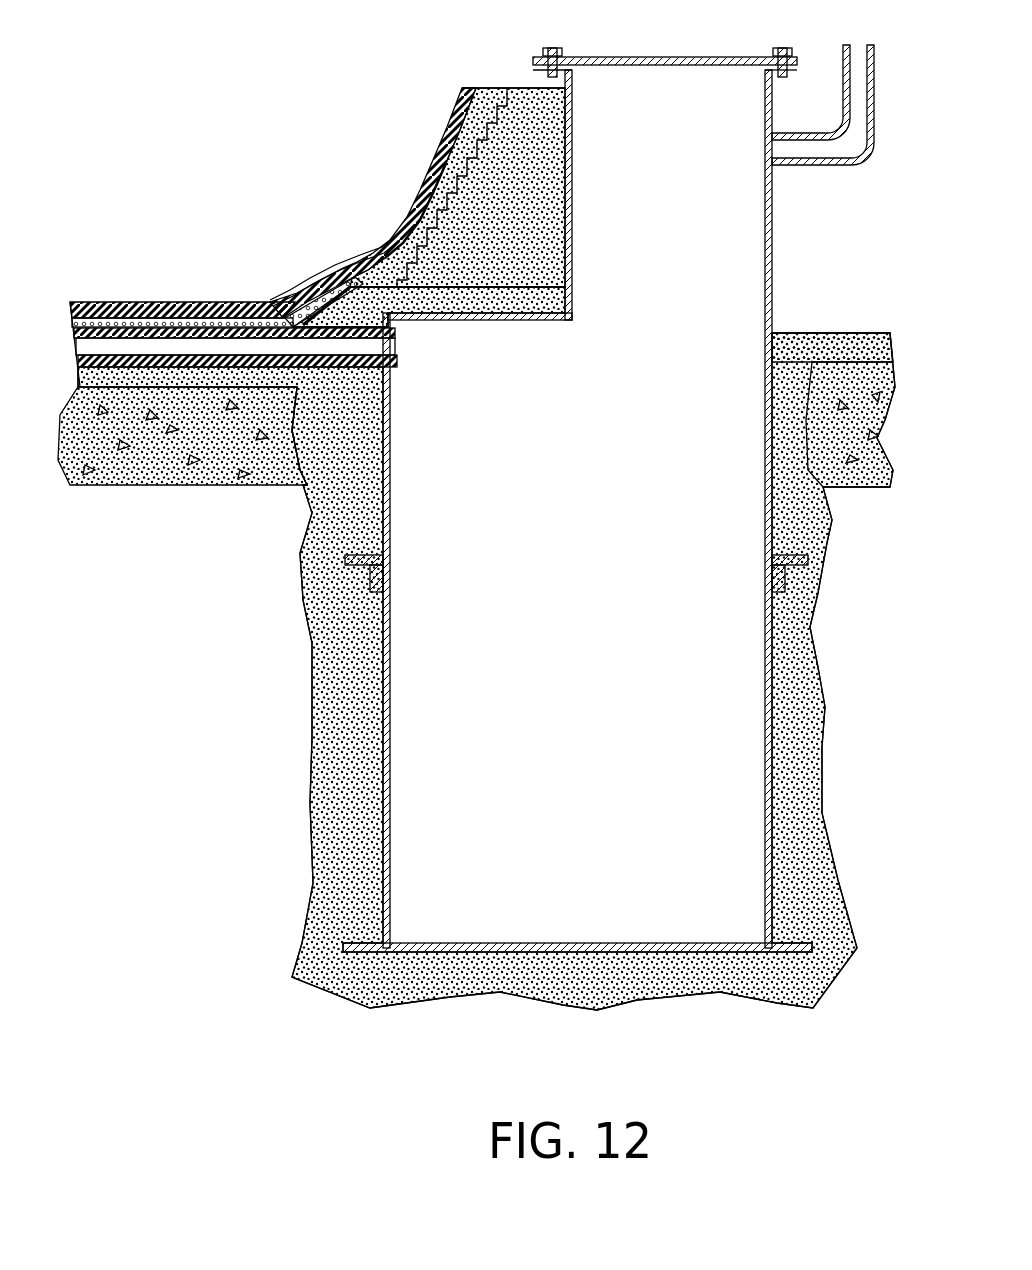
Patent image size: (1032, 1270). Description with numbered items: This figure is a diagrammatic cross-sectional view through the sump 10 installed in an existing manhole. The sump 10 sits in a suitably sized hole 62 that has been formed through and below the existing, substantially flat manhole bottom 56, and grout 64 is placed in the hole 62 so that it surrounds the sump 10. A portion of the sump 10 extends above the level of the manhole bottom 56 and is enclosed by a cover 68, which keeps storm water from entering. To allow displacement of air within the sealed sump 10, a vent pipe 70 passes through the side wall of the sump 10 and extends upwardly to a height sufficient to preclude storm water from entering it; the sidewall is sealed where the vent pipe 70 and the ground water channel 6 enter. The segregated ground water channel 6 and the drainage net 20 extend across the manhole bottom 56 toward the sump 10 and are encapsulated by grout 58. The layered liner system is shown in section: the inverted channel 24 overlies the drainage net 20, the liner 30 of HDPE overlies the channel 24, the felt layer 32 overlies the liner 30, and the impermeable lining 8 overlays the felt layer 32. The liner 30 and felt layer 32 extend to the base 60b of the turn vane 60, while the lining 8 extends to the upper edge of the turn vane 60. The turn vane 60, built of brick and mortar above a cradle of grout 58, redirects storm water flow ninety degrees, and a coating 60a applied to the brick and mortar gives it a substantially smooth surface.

The ground water channel 6 is at (85, 347).
The impermeable lining 8 is at (430, 130).
The sump 10 is at (583, 698).
The drainage net 20 is at (398, 362).
The inverted channel 24 is at (397, 333).
The liner 30 is at (85, 324).
The felt layer 32 is at (173, 318).
The manhole bottom 56 is at (185, 440).
The grout 58 is at (465, 305).
The turn vane 60 is at (520, 185).
The coating 60a is at (425, 225).
The base of turn vane 60b is at (322, 235).
The hole 62 is at (820, 735).
The grout 64 is at (330, 745).
The cover 68 is at (626, 56).
The vent pipe 70 is at (845, 125).